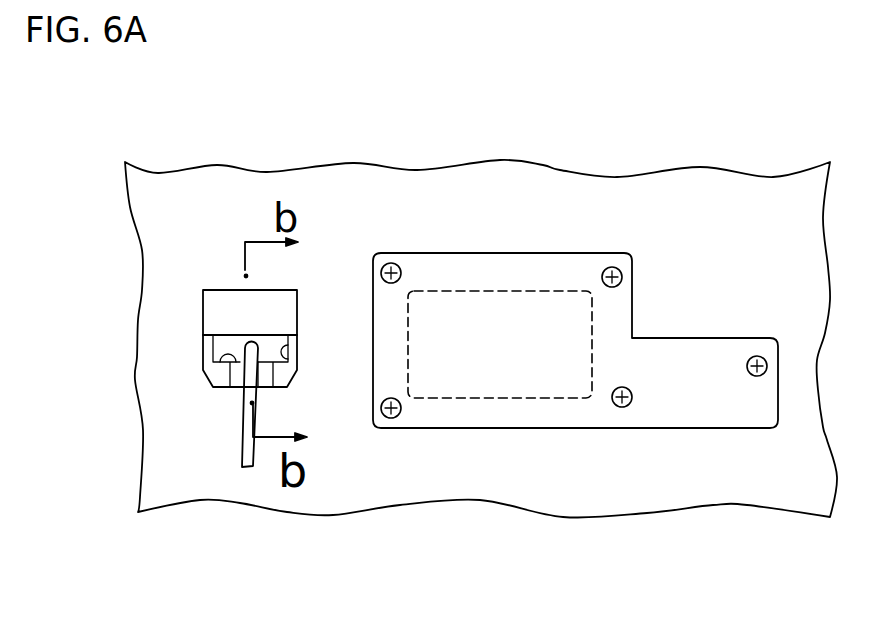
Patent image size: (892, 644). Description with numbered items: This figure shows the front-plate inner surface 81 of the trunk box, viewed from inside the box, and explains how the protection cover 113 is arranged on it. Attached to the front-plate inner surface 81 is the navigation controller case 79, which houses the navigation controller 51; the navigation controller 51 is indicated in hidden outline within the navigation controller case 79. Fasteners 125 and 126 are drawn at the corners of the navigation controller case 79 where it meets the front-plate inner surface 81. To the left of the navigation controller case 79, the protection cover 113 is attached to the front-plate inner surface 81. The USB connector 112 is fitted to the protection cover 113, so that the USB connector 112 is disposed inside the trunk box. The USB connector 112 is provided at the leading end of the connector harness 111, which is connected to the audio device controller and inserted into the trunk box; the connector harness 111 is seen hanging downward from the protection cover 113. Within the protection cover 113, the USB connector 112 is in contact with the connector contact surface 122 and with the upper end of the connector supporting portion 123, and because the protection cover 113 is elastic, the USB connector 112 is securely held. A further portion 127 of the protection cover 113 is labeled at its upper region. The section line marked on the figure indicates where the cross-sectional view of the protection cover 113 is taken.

The front-plate inner surface 81 is at (465, 193).
The navigation controller case 79 is at (536, 430).
The navigation controller 51 is at (532, 290).
The screw 125 is at (615, 266).
The screw 126 is at (385, 420).
The protection cover 113 is at (192, 351).
The connector housing 127 is at (230, 335).
The connector contact surface 122 is at (290, 355).
The connector supporting portion 123 is at (205, 380).
The USB connector 112 is at (275, 370).
The connector harness 111 is at (247, 447).